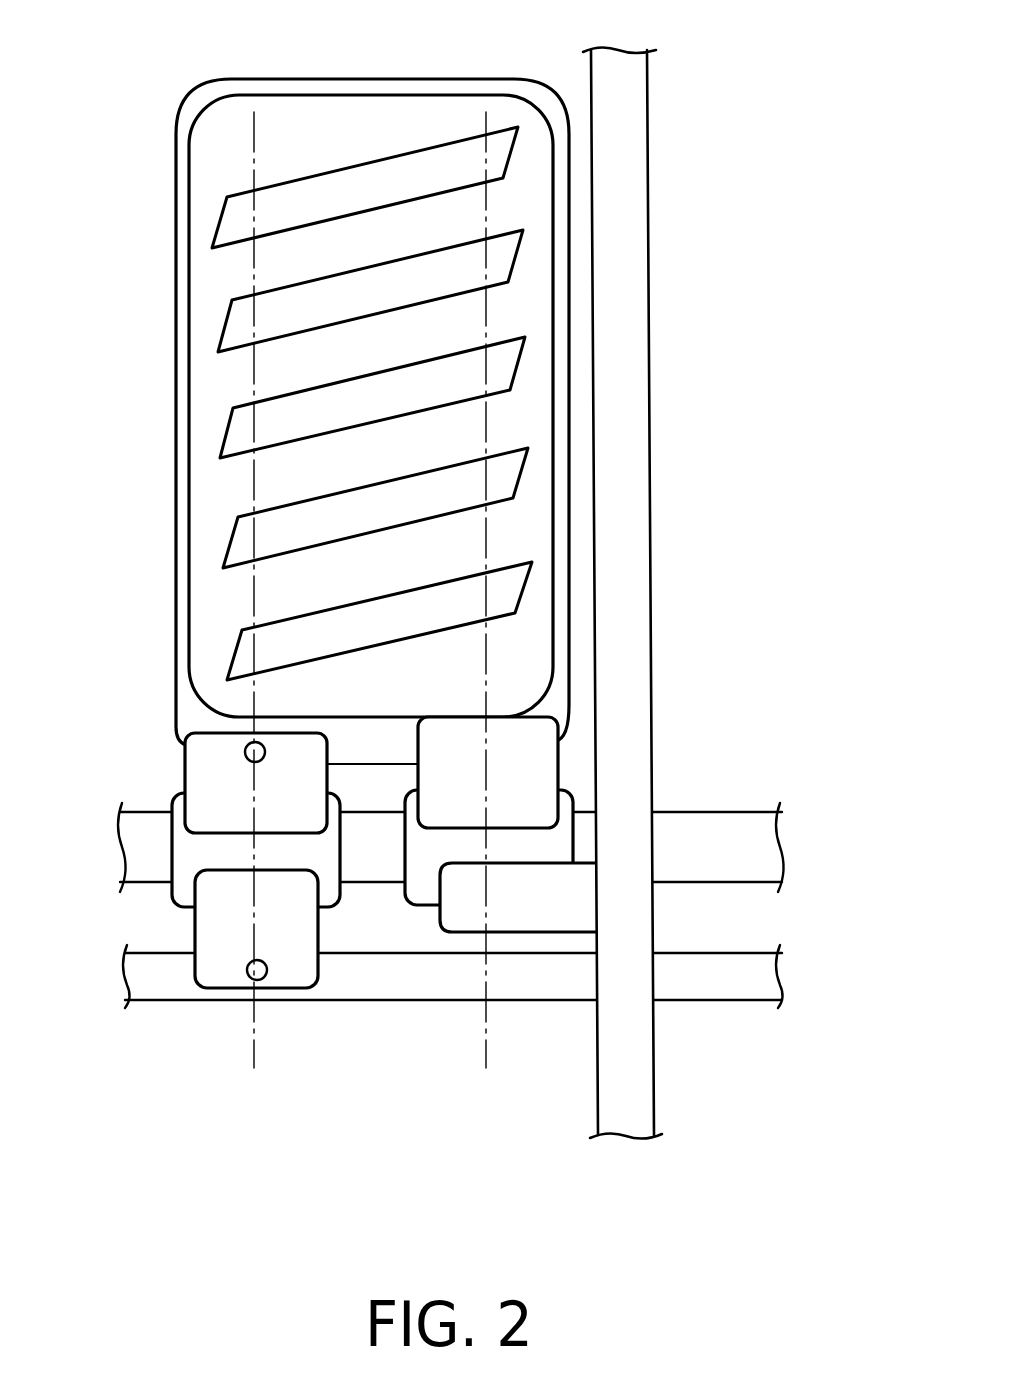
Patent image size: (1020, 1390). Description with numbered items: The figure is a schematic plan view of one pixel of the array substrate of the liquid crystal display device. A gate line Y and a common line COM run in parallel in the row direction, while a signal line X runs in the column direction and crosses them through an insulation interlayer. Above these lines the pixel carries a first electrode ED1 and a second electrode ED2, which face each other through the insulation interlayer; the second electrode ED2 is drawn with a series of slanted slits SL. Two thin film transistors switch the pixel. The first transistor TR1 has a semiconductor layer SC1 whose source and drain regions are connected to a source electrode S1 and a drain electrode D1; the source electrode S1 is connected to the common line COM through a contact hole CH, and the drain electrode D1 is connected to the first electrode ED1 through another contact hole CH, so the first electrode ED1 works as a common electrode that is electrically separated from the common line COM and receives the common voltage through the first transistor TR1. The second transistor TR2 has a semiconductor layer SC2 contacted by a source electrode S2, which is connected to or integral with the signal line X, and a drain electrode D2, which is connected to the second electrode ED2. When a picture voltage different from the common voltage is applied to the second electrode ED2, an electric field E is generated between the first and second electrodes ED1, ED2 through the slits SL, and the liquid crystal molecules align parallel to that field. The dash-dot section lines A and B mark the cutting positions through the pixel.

The slit SL is at (372, 35).
The section line A is at (245, 608).
The section line B is at (480, 607).
The first electrode ED1 is at (175, 482).
The second electrode ED2 is at (191, 406).
The electric field E is at (320, 510).
The contact hole CH is at (246, 746).
The drain electrode D1 is at (190, 765).
The drain electrode D2 is at (555, 750).
The semiconductor layer SC1 is at (182, 848).
The semiconductor layer SC2 is at (557, 845).
The source electrode S1 is at (228, 977).
The source electrode S2 is at (520, 918).
The first transistor TR1 is at (180, 912).
The second transistor TR2 is at (428, 912).
The signal line X is at (625, 1122).
The gate line Y is at (770, 853).
The common line COM is at (770, 978).